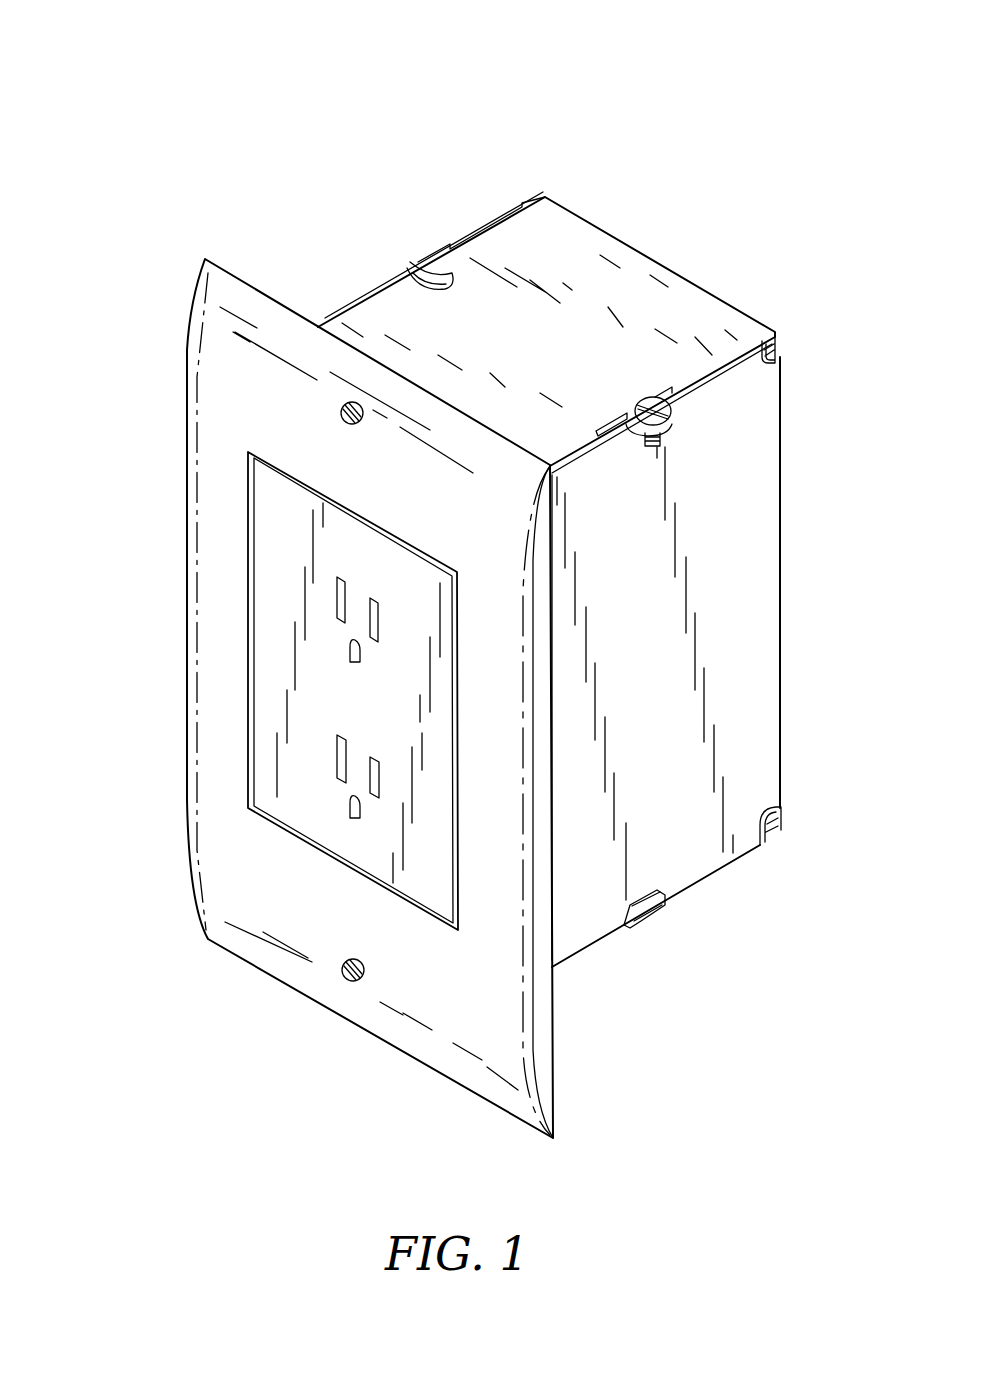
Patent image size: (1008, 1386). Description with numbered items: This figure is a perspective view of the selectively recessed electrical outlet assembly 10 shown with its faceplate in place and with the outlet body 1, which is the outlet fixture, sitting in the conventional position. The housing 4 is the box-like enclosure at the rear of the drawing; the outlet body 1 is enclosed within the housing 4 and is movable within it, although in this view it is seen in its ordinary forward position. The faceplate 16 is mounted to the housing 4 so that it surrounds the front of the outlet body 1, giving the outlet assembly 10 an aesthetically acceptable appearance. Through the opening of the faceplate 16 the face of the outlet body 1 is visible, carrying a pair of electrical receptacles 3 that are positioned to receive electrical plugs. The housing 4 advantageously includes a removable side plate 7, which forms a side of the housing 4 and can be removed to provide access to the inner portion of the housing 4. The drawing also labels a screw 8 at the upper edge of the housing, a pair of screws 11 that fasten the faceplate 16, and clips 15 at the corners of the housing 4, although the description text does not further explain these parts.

The selectively recessed electrical outlet assembly 10 is at (572, 147).
The outlet body 1 is at (270, 630).
The electrical receptacles 3 is at (337, 595).
The housing 4 is at (690, 310).
The removable side plate 7 is at (385, 285).
The screw 8 is at (673, 410).
The faceplate screw 11 is at (340, 417).
The clip 15 is at (778, 357).
The faceplate 16 is at (230, 288).